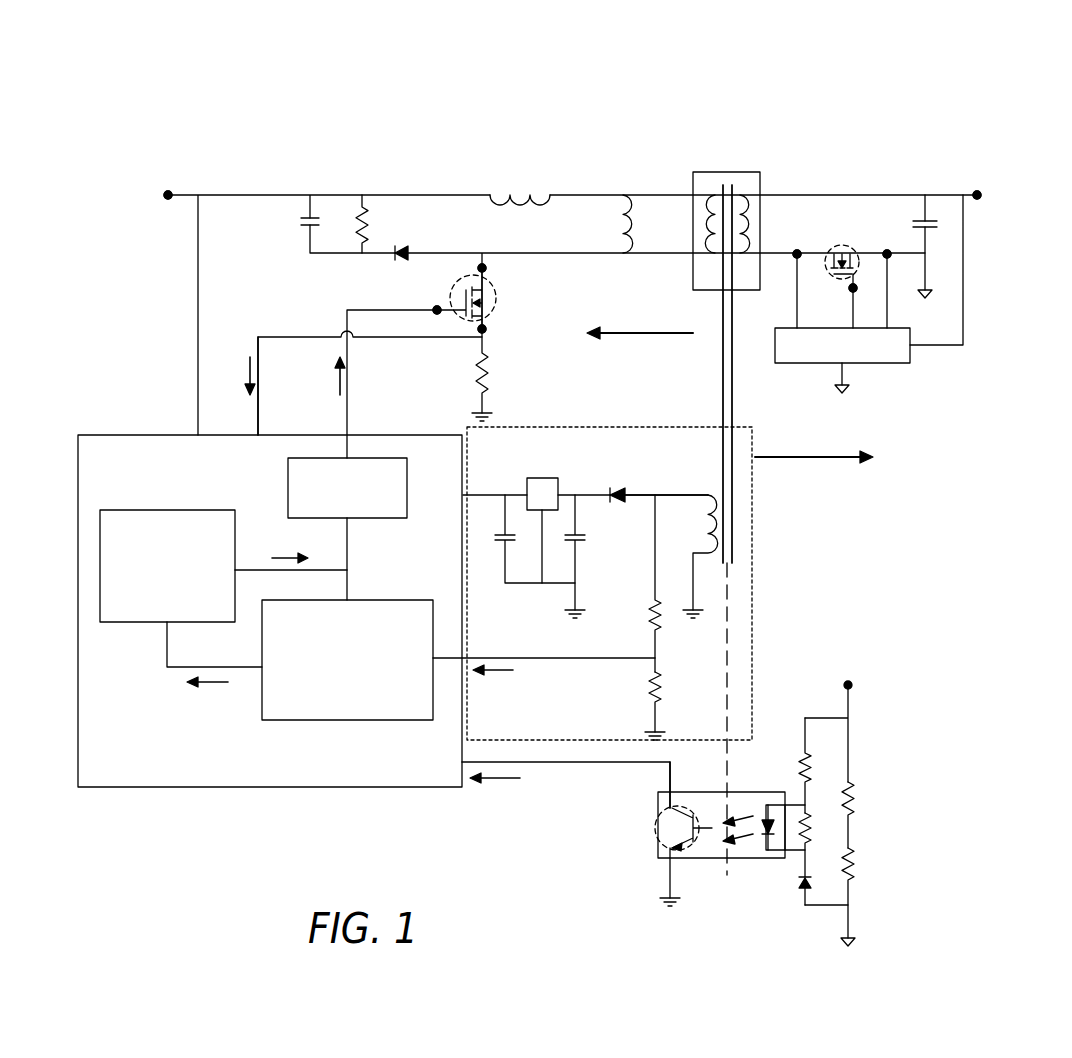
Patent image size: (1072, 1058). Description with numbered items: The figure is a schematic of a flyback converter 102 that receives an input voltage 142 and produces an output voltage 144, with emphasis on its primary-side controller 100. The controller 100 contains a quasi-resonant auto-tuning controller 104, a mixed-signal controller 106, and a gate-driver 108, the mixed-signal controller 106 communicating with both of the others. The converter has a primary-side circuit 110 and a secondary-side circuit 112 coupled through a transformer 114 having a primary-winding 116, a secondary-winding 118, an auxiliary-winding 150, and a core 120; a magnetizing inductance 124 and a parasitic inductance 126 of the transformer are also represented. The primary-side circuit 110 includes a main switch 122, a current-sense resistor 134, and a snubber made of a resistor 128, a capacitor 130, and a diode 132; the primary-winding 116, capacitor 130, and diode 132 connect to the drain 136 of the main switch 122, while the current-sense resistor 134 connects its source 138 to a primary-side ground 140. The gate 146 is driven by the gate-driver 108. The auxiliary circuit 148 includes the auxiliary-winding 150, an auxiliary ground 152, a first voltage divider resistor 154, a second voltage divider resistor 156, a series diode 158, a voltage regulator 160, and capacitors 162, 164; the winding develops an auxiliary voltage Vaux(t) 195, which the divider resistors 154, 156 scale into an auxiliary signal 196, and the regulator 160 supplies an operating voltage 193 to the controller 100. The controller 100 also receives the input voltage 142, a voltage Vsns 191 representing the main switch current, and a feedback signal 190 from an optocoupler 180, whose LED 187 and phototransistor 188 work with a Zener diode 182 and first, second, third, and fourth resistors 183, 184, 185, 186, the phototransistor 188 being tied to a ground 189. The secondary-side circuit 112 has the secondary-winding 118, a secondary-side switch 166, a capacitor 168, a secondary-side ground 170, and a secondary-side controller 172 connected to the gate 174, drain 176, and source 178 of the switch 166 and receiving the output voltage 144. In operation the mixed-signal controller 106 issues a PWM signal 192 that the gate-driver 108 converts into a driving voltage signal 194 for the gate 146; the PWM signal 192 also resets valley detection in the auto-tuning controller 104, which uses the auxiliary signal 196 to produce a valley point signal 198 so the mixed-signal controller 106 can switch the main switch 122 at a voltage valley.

The primary-side controller 100 is at (270, 611).
The flyback converter 102 is at (980, 106).
The quasi-resonant auto-tuning controller 104 is at (347, 660).
The mixed-signal controller 106 is at (181, 588).
The gate-driver 108 is at (347, 529).
The primary-side circuit 110 is at (640, 357).
The secondary-side circuit 112 is at (845, 481).
The transformer 114 is at (693, 268).
The primary-winding 116 is at (706, 215).
The secondary-winding 118 is at (752, 193).
The core 120 is at (726, 185).
The main switch 122 is at (500, 286).
The magnetizing inductance 124 is at (621, 250).
The parasitic inductance 126 is at (522, 193).
The resistor 128 is at (372, 212).
The capacitor 130 is at (305, 237).
The diode 132 is at (402, 250).
The current-sense resistor 134 is at (482, 372).
The drain 136 is at (481, 265).
The source 138 is at (488, 326).
The primary-side ground 140 is at (490, 412).
The input voltage 142 is at (168, 195).
The output voltage 144 is at (852, 682).
The gate 146 is at (434, 309).
The auxiliary circuit 148 is at (752, 607).
The auxiliary-winding 150 is at (710, 494).
The auxiliary ground 152 is at (573, 614).
The first voltage divider resistor 154 is at (650, 615).
The second voltage divider resistor 156 is at (650, 690).
The series diode 158 is at (616, 488).
The voltage regulator 160 is at (543, 492).
The capacitor 162 is at (503, 543).
The capacitor 164 is at (580, 542).
The secondary-side switch 166 is at (843, 245).
The capacitor 168 is at (921, 218).
The secondary-side ground 170 is at (933, 295).
The secondary-side controller 172 is at (842, 345).
The gate 174 is at (851, 290).
The drain 176 is at (799, 251).
The source 178 is at (886, 251).
The optocoupler 180 is at (656, 812).
The Zener diode 182 is at (800, 882).
The first resistor 183 is at (803, 768).
The second resistor 184 is at (808, 825).
The third resistor 185 is at (852, 806).
The fourth resistor 186 is at (852, 870).
The LED 187 is at (765, 818).
The phototransistor 188 is at (665, 855).
The ground 189 is at (680, 902).
The feedback signal 190 is at (490, 782).
The voltage Vsns 191 is at (250, 368).
The PWM signal 192 is at (270, 556).
The operating voltage 193 is at (512, 494).
The driving voltage signal 194 is at (338, 383).
The auxiliary voltage Vaux(t) 195 is at (665, 492).
The auxiliary signal 196 is at (500, 672).
The valley point signal 198 is at (217, 685).